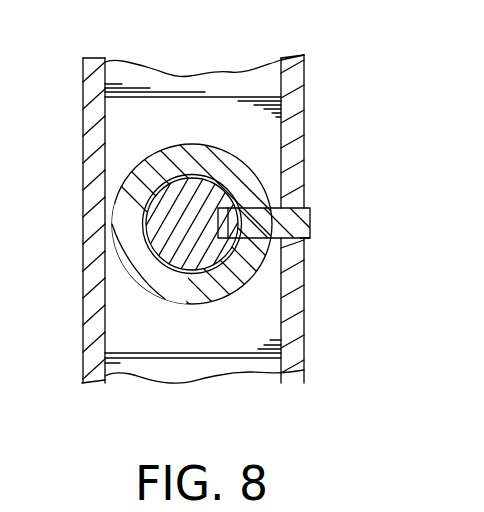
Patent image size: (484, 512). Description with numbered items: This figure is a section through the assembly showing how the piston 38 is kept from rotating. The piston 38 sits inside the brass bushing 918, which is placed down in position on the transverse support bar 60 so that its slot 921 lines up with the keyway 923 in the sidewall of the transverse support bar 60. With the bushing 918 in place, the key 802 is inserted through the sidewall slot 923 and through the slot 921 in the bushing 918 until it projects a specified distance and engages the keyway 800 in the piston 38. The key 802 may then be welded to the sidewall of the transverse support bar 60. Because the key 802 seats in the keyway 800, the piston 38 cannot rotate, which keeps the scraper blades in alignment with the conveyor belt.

The transverse support bar 60 is at (83, 82).
The piston 38 is at (180, 186).
The key 802 is at (310, 212).
The keyway in the sidewall of the transverse support bar 923 is at (304, 240).
The slot in bushing 921 is at (279, 254).
The bushing 918 is at (165, 278).
The keyway 800 is at (234, 268).